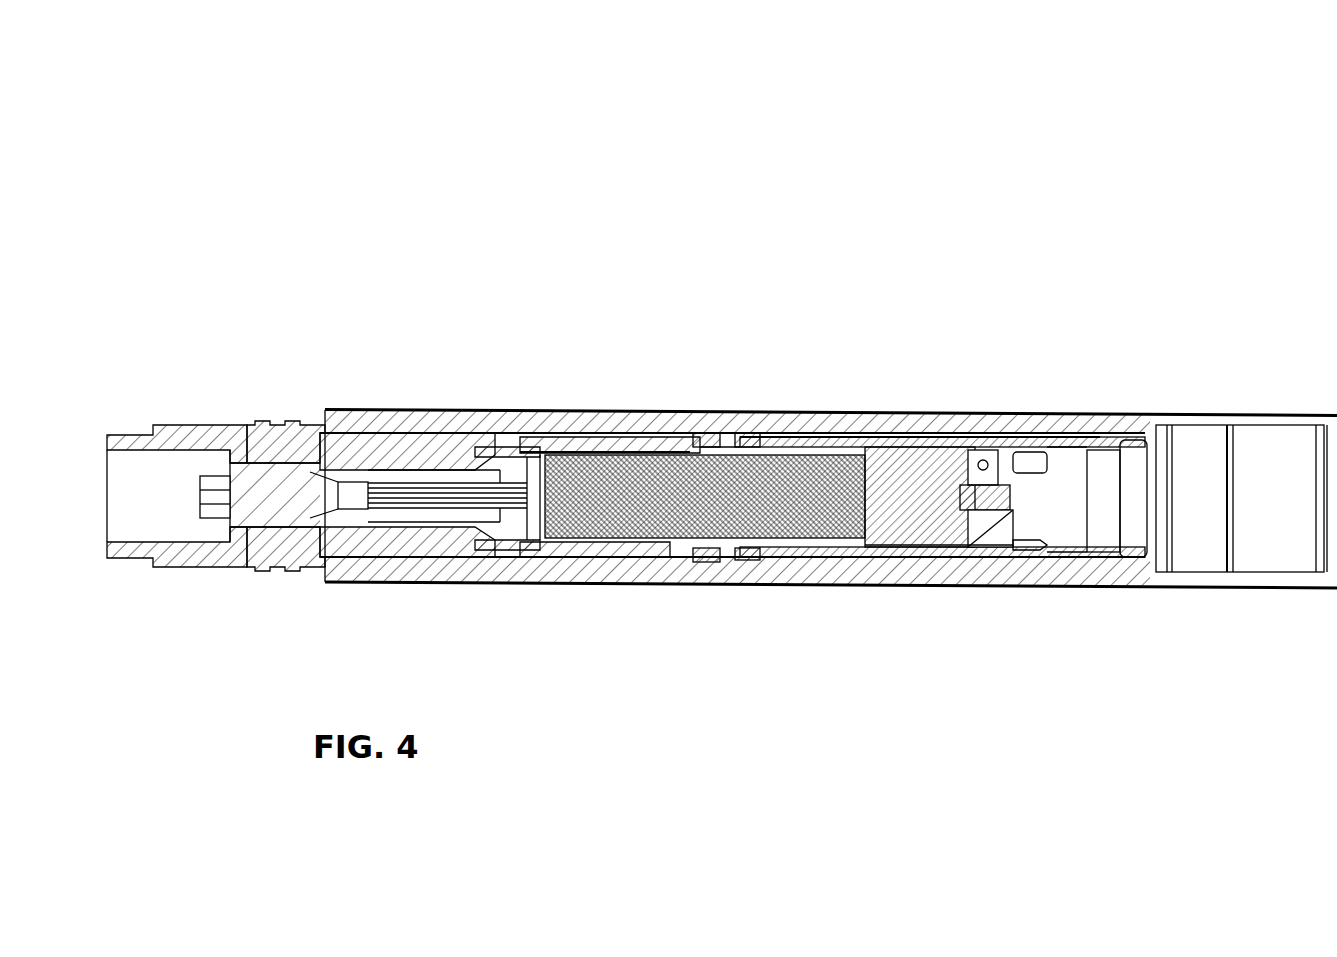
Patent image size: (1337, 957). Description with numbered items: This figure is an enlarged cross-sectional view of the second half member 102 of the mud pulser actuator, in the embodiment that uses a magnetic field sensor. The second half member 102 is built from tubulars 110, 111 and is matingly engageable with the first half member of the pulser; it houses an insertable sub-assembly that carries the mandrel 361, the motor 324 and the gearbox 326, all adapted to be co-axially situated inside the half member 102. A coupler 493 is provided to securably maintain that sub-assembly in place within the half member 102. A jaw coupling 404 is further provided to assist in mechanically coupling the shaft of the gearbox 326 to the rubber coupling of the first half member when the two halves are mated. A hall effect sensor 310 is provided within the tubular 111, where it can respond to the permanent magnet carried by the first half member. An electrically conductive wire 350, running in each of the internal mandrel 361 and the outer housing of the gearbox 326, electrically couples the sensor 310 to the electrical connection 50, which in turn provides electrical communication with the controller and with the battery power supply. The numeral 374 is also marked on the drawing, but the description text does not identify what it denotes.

The second half member 102 is at (259, 172).
The electrical connection 50 is at (228, 470).
The tubular 110 is at (350, 410).
The mandrel 361 is at (411, 420).
The motor 324 is at (610, 448).
The coupler 493 is at (702, 433).
The electrically conductive wire 350 is at (830, 437).
The gearbox 326 is at (900, 433).
The hall effect sensor 310 is at (1106, 443).
The jaw coupling 404 is at (1012, 555).
The spacer 374 is at (950, 567).
The tubular 111 is at (1192, 412).